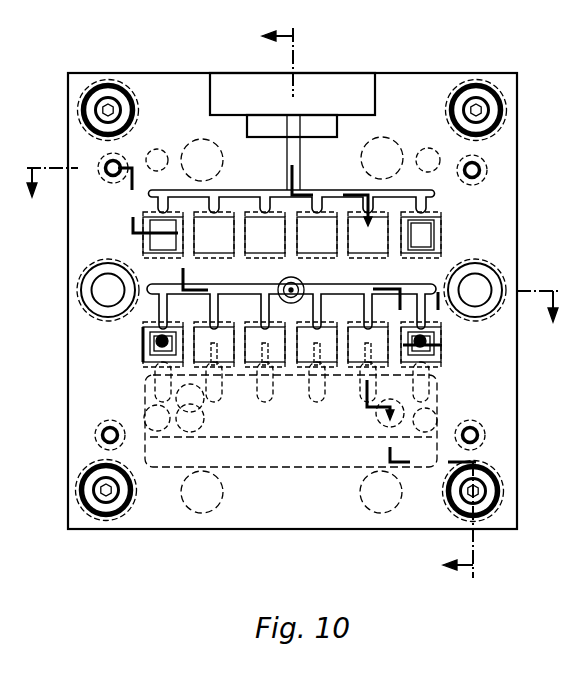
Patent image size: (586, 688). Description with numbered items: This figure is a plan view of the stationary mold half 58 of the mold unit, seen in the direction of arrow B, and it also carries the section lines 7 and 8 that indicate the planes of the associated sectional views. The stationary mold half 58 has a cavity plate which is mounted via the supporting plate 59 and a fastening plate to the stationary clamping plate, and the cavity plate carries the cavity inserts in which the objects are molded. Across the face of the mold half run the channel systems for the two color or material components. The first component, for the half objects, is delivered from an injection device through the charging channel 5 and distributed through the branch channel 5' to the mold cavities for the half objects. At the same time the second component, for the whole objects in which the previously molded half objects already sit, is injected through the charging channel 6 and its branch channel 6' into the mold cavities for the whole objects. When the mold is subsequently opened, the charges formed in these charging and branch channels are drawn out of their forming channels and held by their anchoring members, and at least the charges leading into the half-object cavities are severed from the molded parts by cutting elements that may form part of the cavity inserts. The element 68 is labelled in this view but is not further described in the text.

The stationary mold half 58 is at (164, 97).
The charging channel 6 is at (292, 102).
The branch channel 6' is at (293, 136).
The terminal housing 68 is at (417, 226).
The charging channel 5 is at (425, 234).
The branch channel 5' is at (361, 298).
The supporting plate 59 is at (374, 350).
The section line VII-VII 7 is at (359, 301).
The section line VIII-VIII 8 is at (291, 260).